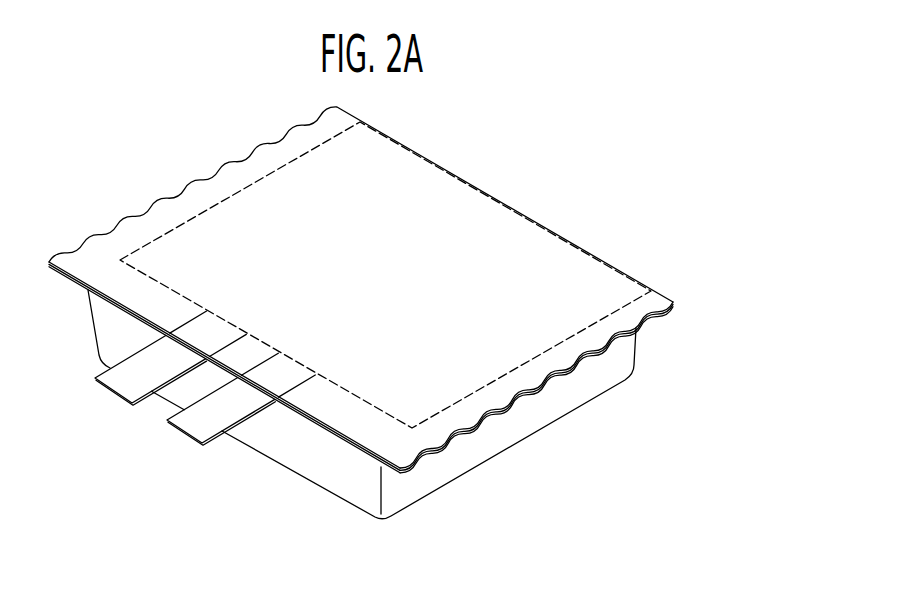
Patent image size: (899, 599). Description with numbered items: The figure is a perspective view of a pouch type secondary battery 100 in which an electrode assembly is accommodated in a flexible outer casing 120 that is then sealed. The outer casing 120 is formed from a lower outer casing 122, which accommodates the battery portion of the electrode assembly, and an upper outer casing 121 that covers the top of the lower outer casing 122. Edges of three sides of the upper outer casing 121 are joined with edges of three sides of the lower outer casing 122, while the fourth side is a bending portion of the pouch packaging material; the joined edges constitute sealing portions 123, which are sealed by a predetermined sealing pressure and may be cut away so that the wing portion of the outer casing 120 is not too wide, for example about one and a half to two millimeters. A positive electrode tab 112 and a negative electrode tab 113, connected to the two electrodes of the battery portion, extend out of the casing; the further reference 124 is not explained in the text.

The pouch type secondary battery 100 is at (216, 106).
The positive electrode tab 112 is at (197, 425).
The negative electrode tab 113 is at (125, 385).
The flexible outer casing 120 is at (748, 303).
The upper outer casing 121 is at (670, 306).
The lower outer casing 122 is at (667, 316).
The sealing portion 123 is at (345, 415).
The sealing portion 124 is at (208, 333).